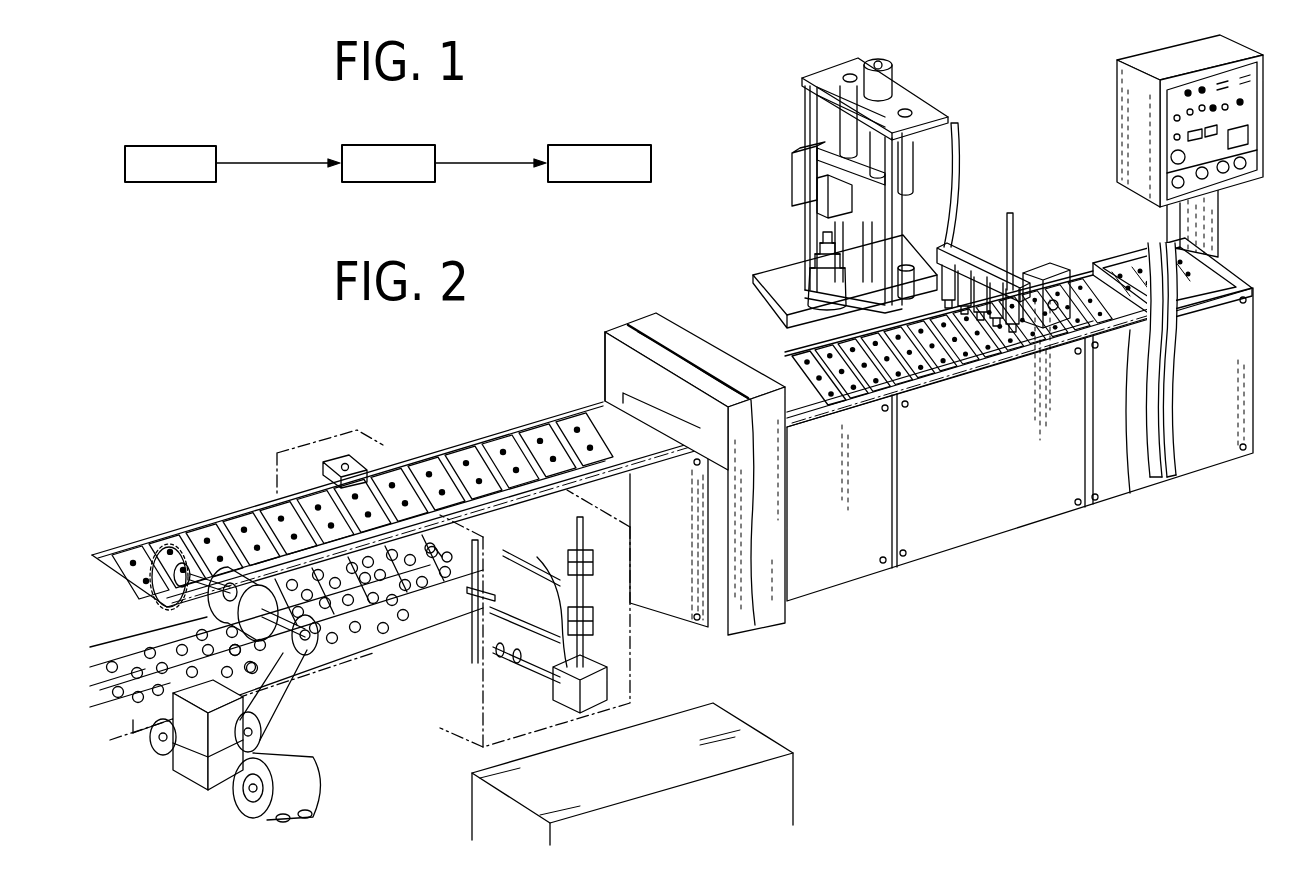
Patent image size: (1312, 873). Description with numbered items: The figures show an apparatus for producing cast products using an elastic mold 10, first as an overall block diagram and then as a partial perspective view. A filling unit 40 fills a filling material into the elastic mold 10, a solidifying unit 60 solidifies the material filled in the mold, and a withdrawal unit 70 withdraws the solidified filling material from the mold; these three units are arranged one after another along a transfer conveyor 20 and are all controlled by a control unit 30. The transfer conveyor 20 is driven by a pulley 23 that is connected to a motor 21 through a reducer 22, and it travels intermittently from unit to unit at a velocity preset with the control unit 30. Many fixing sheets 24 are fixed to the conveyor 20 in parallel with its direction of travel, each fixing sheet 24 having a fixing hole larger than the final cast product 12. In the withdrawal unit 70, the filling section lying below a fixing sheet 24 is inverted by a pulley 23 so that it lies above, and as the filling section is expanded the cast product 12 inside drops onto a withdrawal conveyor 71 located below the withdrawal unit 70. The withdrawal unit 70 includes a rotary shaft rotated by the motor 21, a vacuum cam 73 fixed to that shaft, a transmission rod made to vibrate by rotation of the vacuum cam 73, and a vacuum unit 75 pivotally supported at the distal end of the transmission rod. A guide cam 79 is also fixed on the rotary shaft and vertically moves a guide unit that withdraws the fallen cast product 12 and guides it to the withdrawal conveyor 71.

In FIG. 2, the elastic mold 10 is at (367, 607).
In FIG. 2, the cast product 12 is at (110, 665).
In FIG. 2, the transfer conveyor 20 is at (1095, 240).
In FIG. 2, the motor 21 is at (250, 822).
In FIG. 2, the reducer 22 is at (192, 780).
In FIG. 2, the pulley 23 is at (172, 556).
In FIG. 2, the fixing sheet 24 is at (1142, 480).
In FIG. 2, the control unit 30 is at (1117, 63).
In FIG. 1, the filling unit 40 is at (186, 160).
In FIG. 2, the filling unit 40 is at (920, 115).
In FIG. 1, the solidifying unit 60 is at (401, 156).
In FIG. 2, the solidifying unit 60 is at (643, 300).
In FIG. 1, the withdrawal unit 70 is at (613, 156).
In FIG. 2, the withdrawal unit 70 is at (342, 416).
In FIG. 2, the withdrawal conveyor 71 is at (108, 683).
In FIG. 2, the vacuum cam 73 is at (597, 562).
In FIG. 2, the vacuum unit 75 is at (433, 540).
In FIG. 2, the guide cam 79 is at (597, 623).